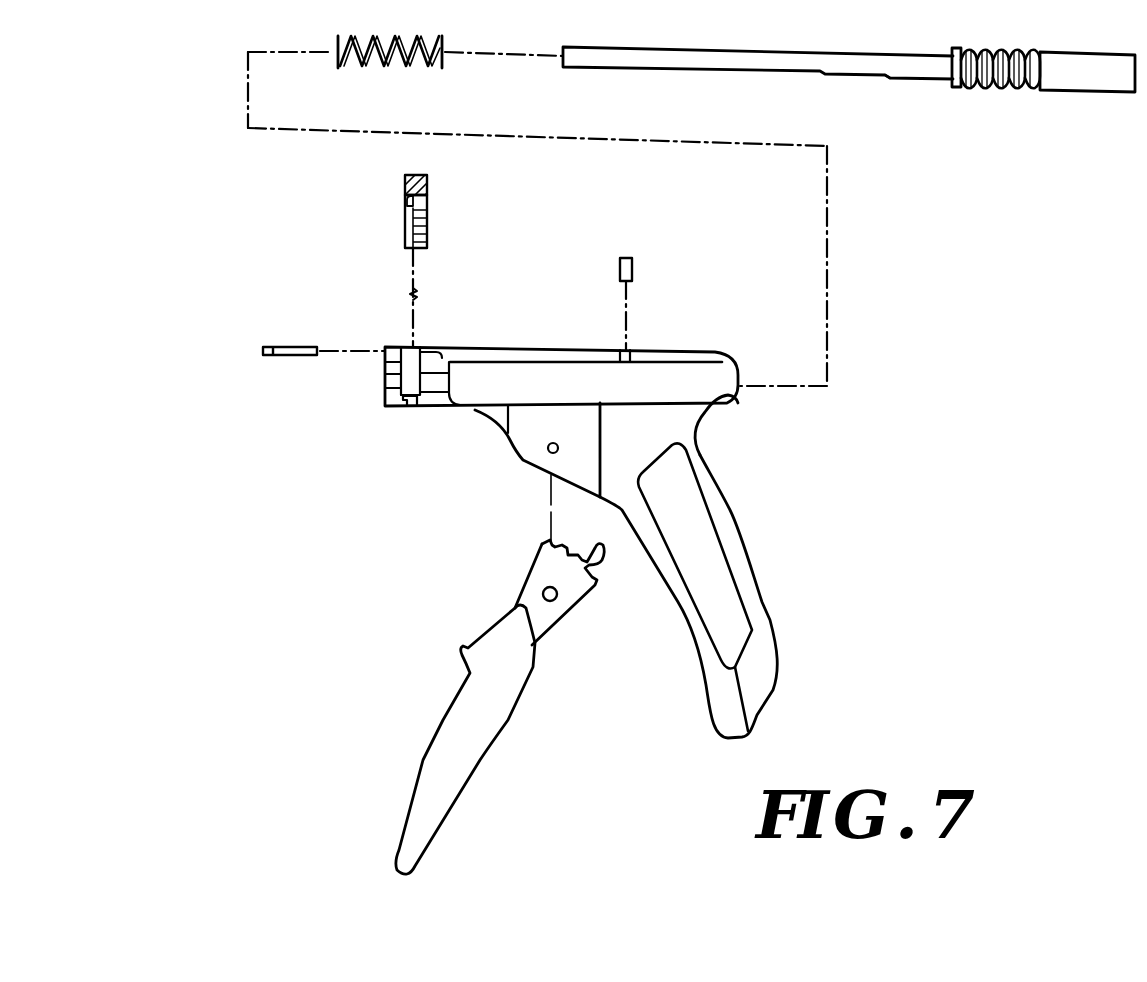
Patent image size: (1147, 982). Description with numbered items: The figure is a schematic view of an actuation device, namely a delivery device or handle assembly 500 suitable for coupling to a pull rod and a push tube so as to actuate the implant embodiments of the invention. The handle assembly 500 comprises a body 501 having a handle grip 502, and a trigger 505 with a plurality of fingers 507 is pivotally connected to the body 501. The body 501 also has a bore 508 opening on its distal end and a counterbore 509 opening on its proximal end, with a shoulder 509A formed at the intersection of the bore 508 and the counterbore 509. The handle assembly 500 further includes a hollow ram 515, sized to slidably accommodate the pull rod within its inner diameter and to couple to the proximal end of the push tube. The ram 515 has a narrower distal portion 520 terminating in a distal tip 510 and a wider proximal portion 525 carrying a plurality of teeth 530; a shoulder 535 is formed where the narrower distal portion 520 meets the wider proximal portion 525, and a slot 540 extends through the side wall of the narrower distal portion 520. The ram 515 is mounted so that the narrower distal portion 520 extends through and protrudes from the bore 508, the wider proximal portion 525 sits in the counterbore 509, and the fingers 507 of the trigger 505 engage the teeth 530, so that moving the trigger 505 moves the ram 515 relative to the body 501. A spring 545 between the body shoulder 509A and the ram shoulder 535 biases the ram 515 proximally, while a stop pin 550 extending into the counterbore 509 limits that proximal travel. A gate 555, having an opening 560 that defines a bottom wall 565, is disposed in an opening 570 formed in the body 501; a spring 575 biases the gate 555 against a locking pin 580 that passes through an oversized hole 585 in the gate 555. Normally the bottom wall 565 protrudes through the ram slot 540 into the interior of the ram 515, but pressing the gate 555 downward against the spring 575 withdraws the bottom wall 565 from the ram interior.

The handle assembly 500 is at (368, 555).
The body 501 is at (548, 345).
The handle grip 502 is at (757, 570).
The trigger 505 is at (431, 731).
The fingers 507 is at (560, 560).
The bore 508 is at (383, 380).
The counterbore 509 is at (733, 403).
The shoulder 509A is at (458, 412).
The distal tip 510 is at (563, 56).
The hollow ram 515 is at (713, 71).
The narrower distal portion 520 is at (668, 68).
The wider proximal portion 525 is at (1065, 92).
The teeth 530 is at (1009, 89).
The shoulder 535 is at (952, 86).
The slot 540 is at (872, 75).
The spring 545 is at (373, 58).
The stop pin 550 is at (636, 264).
The gate 555 is at (431, 185).
The opening 560 is at (430, 222).
The bottom wall 565 is at (428, 240).
The opening 570 is at (400, 405).
The spring 575 is at (407, 293).
The locking pin 580 is at (289, 356).
The oversized hole 585 is at (405, 200).